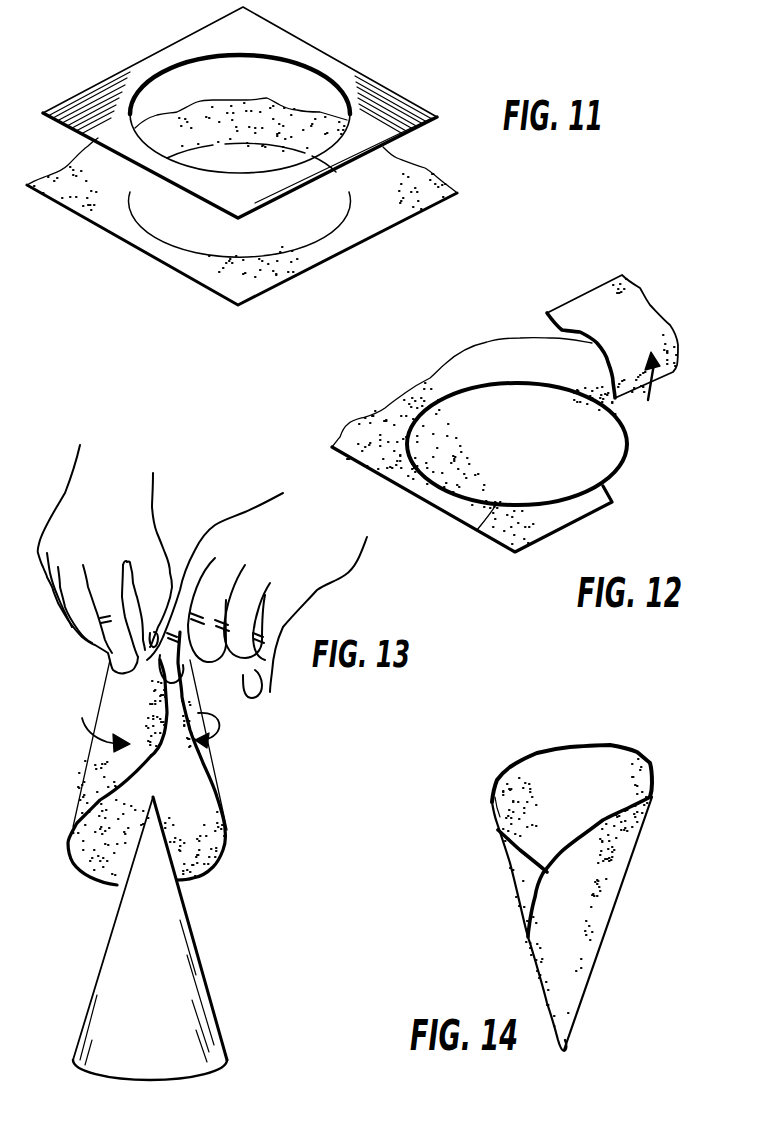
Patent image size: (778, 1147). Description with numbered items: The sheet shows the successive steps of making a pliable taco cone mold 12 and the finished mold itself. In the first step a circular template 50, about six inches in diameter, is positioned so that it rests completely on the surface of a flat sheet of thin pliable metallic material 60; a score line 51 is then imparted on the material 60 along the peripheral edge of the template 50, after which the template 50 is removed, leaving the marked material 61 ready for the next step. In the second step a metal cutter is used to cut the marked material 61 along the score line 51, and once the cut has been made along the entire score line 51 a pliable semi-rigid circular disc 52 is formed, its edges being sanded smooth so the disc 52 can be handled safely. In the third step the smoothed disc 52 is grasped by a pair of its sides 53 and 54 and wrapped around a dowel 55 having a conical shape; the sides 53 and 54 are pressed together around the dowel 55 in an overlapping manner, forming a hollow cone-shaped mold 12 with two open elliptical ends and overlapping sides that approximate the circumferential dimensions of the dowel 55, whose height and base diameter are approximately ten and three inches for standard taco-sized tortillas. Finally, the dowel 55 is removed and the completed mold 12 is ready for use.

In FIG. 11, the circular template 50 is at (97, 92).
In FIG. 11, the flat sheet of thin pliable metallic material 60 is at (417, 197).
In FIG. 11, the score line 51 is at (303, 252).
In FIG. 12, the score line 51 is at (477, 530).
In FIG. 12, the pliable semi-rigid circular disc 52 is at (610, 445).
In FIG. 13, the pliable semi-rigid circular disc 52 is at (97, 783).
In FIG. 12, the marked material 61 is at (373, 432).
In FIG. 13, the side of the disc 53 is at (133, 683).
In FIG. 13, the side of the disc 54 is at (166, 677).
In FIG. 13, the dowel 55 is at (188, 992).
In FIG. 14, the mold 12 is at (597, 903).